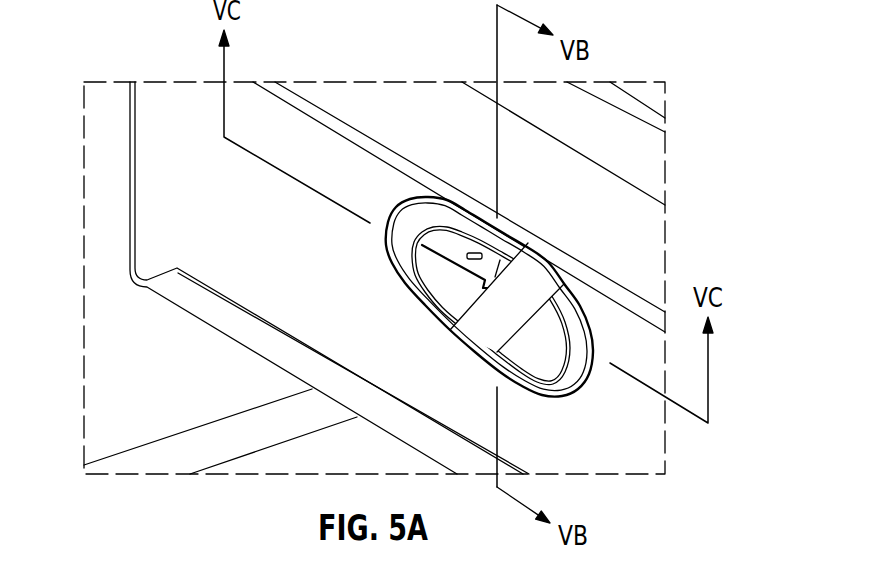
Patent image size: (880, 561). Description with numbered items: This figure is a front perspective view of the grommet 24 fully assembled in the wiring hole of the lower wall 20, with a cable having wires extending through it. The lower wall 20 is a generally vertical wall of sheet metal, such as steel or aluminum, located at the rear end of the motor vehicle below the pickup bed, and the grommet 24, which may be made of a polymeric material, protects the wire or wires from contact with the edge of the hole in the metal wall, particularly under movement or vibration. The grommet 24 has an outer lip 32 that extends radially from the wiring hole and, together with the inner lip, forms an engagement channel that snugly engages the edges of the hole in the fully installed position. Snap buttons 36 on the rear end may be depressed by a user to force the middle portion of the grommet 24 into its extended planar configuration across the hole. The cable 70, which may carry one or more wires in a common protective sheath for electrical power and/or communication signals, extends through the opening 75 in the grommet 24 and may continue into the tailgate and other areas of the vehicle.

The lower wall 20 is at (152, 227).
The grommet 24 is at (575, 277).
The outer lip 32 is at (388, 217).
The snap buttons 36 is at (480, 272).
The cable 70 is at (540, 270).
The opening 75 is at (436, 273).